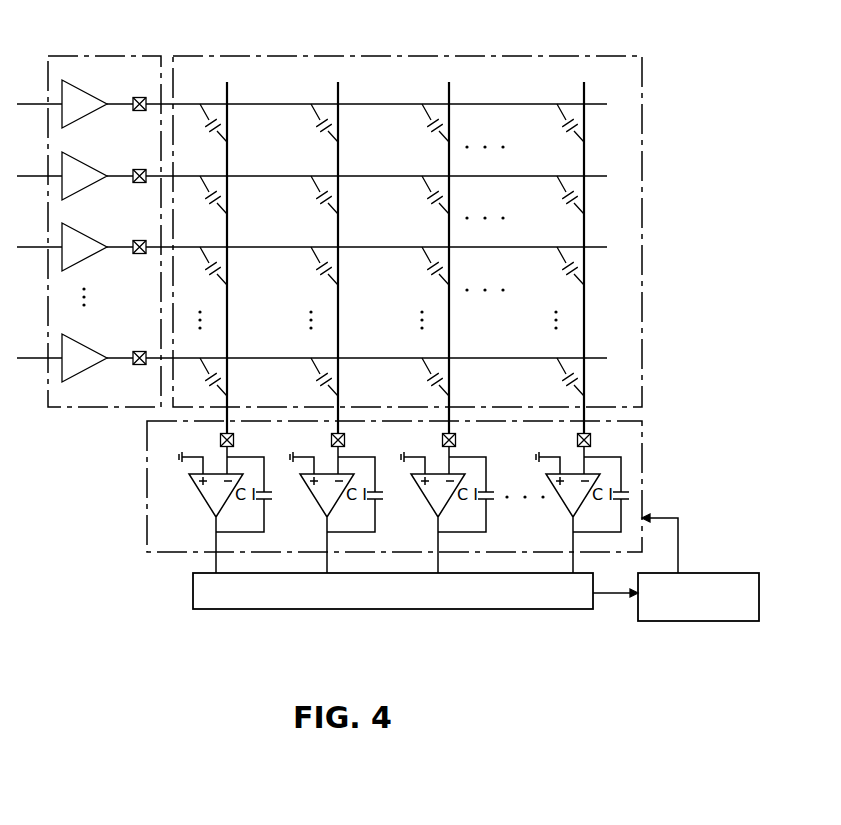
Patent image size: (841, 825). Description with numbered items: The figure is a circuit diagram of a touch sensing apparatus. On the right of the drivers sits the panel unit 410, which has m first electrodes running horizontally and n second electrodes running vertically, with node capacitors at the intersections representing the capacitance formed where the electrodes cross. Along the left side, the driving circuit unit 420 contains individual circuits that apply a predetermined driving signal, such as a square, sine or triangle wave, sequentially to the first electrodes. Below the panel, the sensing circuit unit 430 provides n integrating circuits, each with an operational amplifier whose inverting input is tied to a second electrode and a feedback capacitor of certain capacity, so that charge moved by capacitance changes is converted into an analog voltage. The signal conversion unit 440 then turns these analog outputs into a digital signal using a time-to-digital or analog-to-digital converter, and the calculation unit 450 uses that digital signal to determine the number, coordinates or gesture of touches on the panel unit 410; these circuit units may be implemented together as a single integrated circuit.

The panel unit 410 is at (421, 56).
The driving circuit unit 420 is at (105, 56).
The sensing circuit unit 430 is at (147, 490).
The signal conversion unit 440 is at (394, 612).
The calculation unit 450 is at (700, 624).